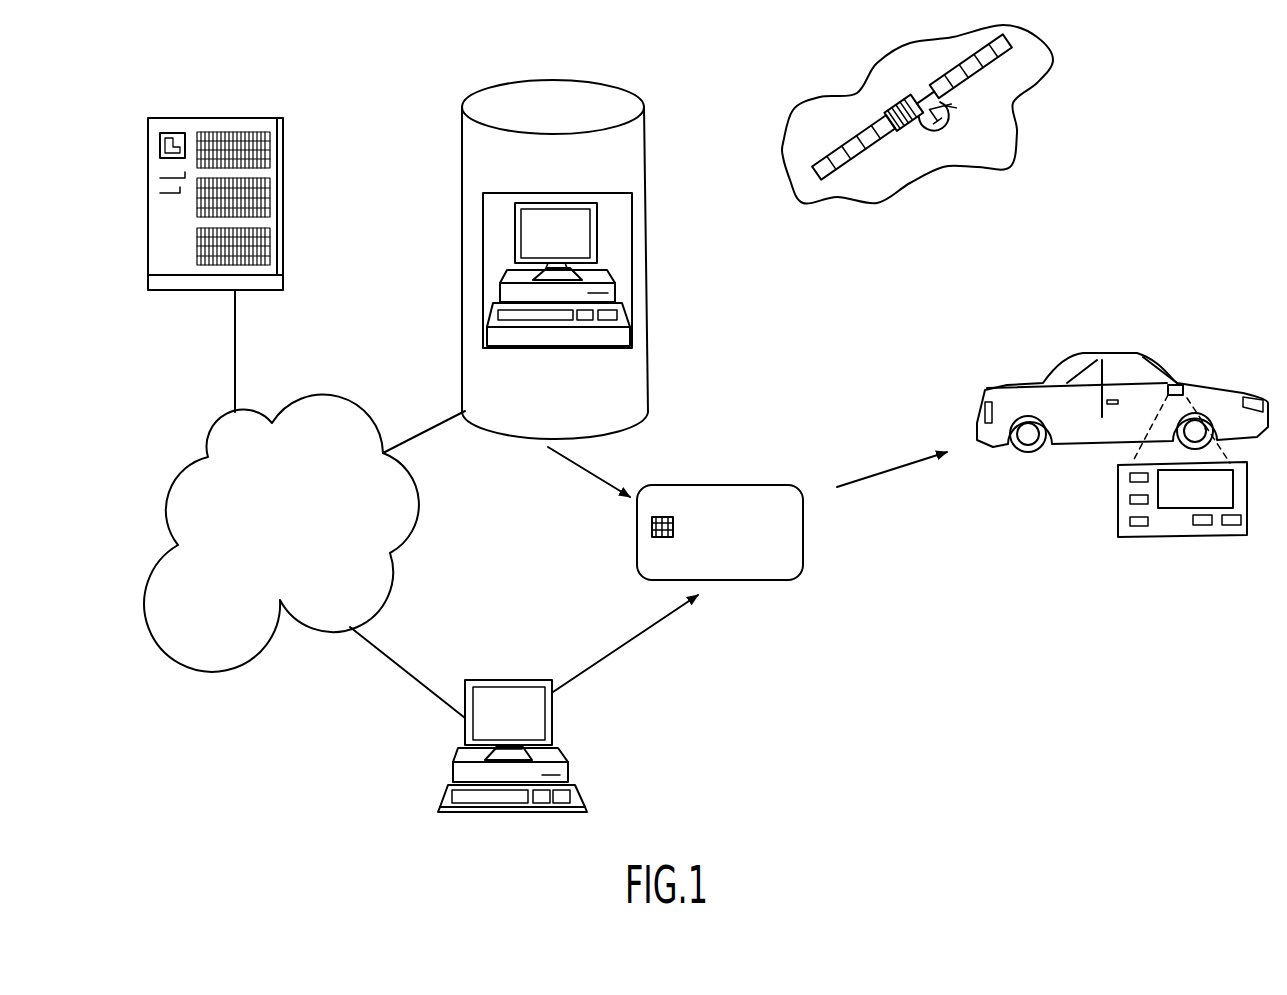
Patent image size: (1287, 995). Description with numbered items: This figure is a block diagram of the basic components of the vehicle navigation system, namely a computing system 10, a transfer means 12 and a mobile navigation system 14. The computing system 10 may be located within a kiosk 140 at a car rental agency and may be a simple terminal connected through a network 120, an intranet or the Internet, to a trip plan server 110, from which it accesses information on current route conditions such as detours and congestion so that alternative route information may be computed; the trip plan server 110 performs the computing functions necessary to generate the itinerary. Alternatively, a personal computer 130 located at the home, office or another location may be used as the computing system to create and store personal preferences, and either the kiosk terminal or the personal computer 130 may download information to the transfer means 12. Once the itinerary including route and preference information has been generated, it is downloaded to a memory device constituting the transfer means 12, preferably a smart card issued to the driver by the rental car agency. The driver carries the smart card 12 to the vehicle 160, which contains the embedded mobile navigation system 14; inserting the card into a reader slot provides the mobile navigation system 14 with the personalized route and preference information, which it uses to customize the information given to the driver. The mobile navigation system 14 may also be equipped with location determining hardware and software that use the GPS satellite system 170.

The computing system 10 is at (492, 252).
The transfer means 12 is at (803, 510).
The mobile navigation system 14 is at (1118, 517).
The trip plan server 110 is at (288, 217).
The network 120 is at (392, 587).
The personal computer 130 is at (552, 713).
The kiosk 140 is at (646, 240).
The vehicle 160 is at (1007, 385).
The GPS satellite system 170 is at (1017, 133).